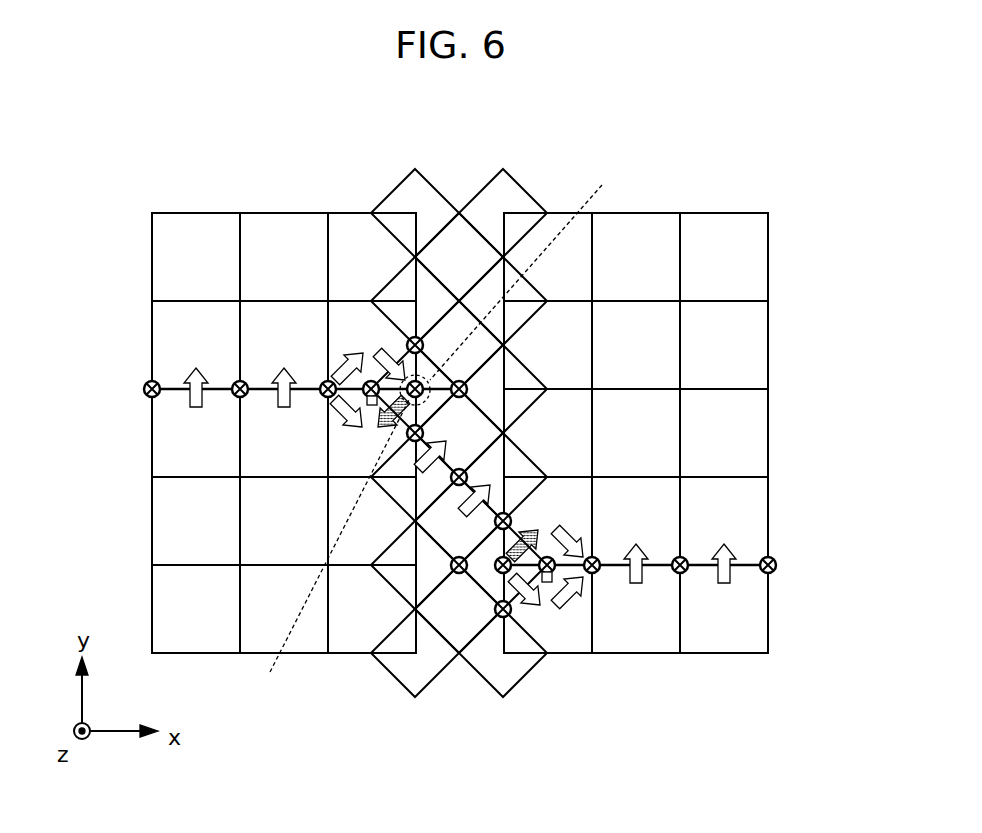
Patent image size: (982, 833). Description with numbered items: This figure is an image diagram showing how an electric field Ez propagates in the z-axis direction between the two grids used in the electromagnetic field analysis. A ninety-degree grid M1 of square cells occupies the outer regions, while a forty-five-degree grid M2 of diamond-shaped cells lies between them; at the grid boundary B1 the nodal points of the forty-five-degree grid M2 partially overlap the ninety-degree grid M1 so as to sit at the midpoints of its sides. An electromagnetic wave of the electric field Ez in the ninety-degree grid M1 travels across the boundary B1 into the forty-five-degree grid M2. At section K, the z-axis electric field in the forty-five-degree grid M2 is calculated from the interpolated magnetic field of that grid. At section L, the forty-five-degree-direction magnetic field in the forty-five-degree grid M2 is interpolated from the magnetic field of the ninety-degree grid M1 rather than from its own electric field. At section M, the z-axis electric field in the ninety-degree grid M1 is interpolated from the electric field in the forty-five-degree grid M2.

The grid boundary B1 is at (388, 185).
The section M is at (522, 270).
The section K is at (398, 387).
The electric field Ez is at (444, 477).
The 90-degree grid M1 is at (707, 425).
The 45-degree grid M2 is at (460, 620).
The section L is at (333, 547).